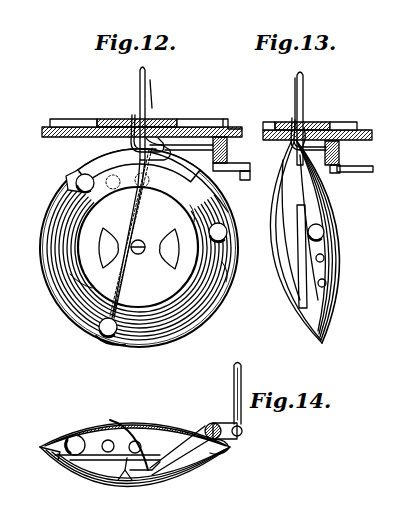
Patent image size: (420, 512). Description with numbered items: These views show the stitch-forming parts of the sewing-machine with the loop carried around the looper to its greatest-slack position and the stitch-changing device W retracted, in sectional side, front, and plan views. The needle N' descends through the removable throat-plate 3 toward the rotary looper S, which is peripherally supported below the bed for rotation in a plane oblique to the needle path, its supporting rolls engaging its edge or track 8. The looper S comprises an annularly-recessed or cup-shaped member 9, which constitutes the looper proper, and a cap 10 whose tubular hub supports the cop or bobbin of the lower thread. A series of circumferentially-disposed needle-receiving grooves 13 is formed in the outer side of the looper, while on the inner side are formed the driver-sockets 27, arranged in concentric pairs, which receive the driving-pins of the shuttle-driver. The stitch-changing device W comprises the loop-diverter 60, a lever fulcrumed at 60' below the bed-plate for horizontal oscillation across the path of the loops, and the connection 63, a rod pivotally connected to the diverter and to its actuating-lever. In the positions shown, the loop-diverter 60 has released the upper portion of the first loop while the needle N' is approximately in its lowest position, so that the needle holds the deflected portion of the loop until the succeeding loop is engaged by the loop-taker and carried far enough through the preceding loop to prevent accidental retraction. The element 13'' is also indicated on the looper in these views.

In FIG. 12, the throat-plate 3 is at (42, 134).
In FIG. 13, the throat-plate 3 is at (364, 130).
In FIG. 12, the edge or track 8 is at (58, 292).
In FIG. 13, the edge or track 8 is at (315, 320).
In FIG. 14, the edge or track 8 is at (95, 455).
In FIG. 12, the annularly-recessed or cup-shaped member 9 is at (58, 249).
In FIG. 13, the annularly-recessed or cup-shaped member 9 is at (330, 252).
In FIG. 14, the annularly-recessed or cup-shaped member 9 is at (135, 467).
In FIG. 12, the cap 10 is at (96, 228).
In FIG. 13, the cap 10 is at (283, 258).
In FIG. 12, the needle-receiving grooves 13 is at (132, 240).
In FIG. 13, the needle-receiving grooves 13 is at (276, 231).
In FIG. 14, the needle-receiving grooves 13 is at (134, 455).
In FIG. 14, the latch tongue 13'' is at (148, 483).
In FIG. 13, the driver-sockets 27 is at (326, 283).
In FIG. 12, the loop-diverter 60 is at (172, 130).
In FIG. 13, the loop-diverter 60 is at (315, 126).
In FIG. 14, the loop-diverter 60 is at (181, 439).
In FIG. 12, the fulcrum of the loop-diverter 60' is at (189, 182).
In FIG. 14, the fulcrum of the loop-diverter 60' is at (223, 415).
In FIG. 12, the connection 63 is at (247, 180).
In FIG. 13, the connection 63 is at (372, 160).
In FIG. 14, the connection 63 is at (234, 373).
In FIG. 12, the stitch-changing device W is at (229, 150).
In FIG. 13, the stitch-changing device W is at (342, 153).
In FIG. 12, the rotary looper S is at (148, 246).
In FIG. 13, the rotary looper S is at (256, 235).
In FIG. 14, the rotary looper S is at (129, 436).
In FIG. 12, the needle N' is at (126, 192).
In FIG. 13, the needle N' is at (311, 118).
In FIG. 14, the needle N' is at (116, 481).